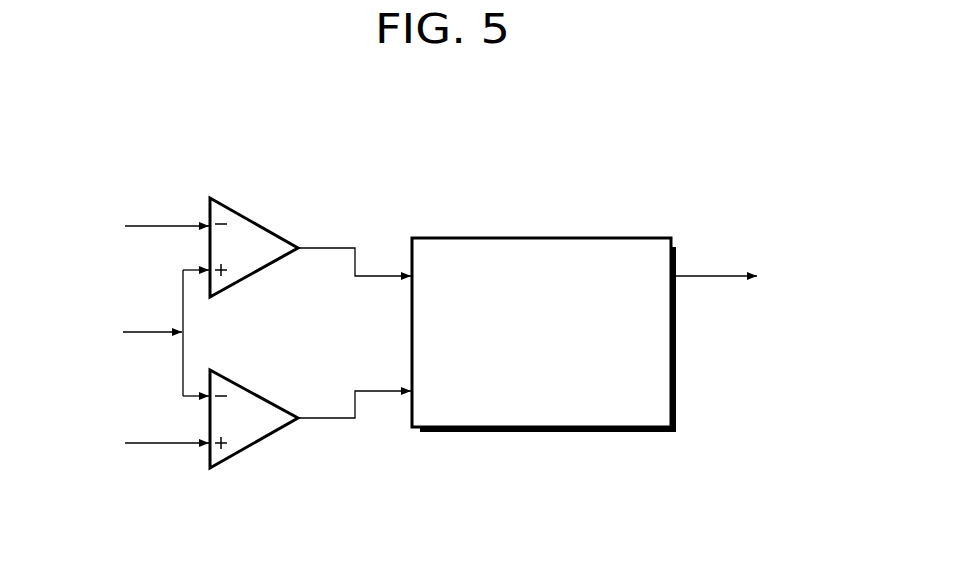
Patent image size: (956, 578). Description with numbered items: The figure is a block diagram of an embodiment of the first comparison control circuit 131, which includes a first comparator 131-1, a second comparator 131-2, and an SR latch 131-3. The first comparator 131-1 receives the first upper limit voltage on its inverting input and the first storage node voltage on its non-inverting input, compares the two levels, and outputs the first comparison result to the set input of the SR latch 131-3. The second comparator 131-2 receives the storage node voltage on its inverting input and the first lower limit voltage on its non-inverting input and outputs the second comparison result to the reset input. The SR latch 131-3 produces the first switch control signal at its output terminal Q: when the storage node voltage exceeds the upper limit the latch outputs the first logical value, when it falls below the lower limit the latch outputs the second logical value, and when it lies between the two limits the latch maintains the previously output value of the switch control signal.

The first comparison control circuit 131 is at (800, 162).
The first comparator 131-1 is at (253, 218).
The second comparator 131-2 is at (252, 445).
The SR latch 131-3 is at (613, 238).